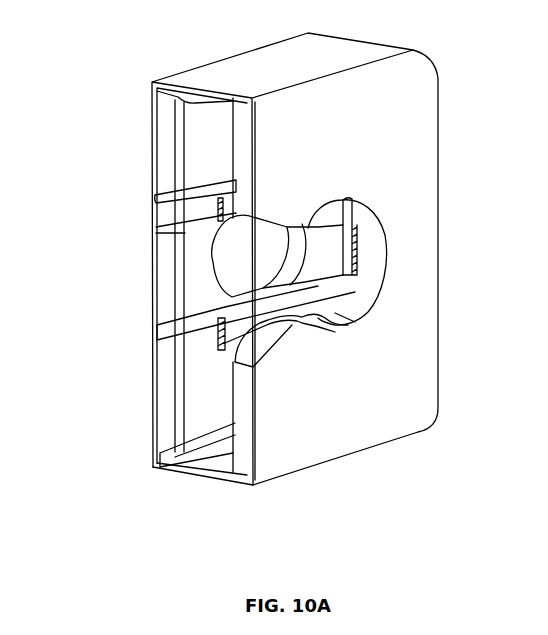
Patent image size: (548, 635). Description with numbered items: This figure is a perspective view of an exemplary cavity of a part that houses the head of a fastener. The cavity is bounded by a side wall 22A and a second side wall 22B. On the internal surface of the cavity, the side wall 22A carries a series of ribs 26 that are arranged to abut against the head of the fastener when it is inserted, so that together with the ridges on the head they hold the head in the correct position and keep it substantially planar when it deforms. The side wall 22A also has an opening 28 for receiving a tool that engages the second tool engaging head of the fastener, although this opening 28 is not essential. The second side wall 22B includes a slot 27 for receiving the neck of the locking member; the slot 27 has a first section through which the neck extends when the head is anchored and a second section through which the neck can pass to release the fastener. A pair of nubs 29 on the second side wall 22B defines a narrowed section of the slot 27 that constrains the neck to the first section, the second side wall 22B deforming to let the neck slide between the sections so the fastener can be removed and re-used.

The side wall 22A is at (154, 418).
The second side wall 22B is at (298, 470).
The ribs 26 is at (190, 342).
The slot 27 is at (362, 265).
The opening 28 is at (238, 249).
The nubs 29 is at (357, 225).